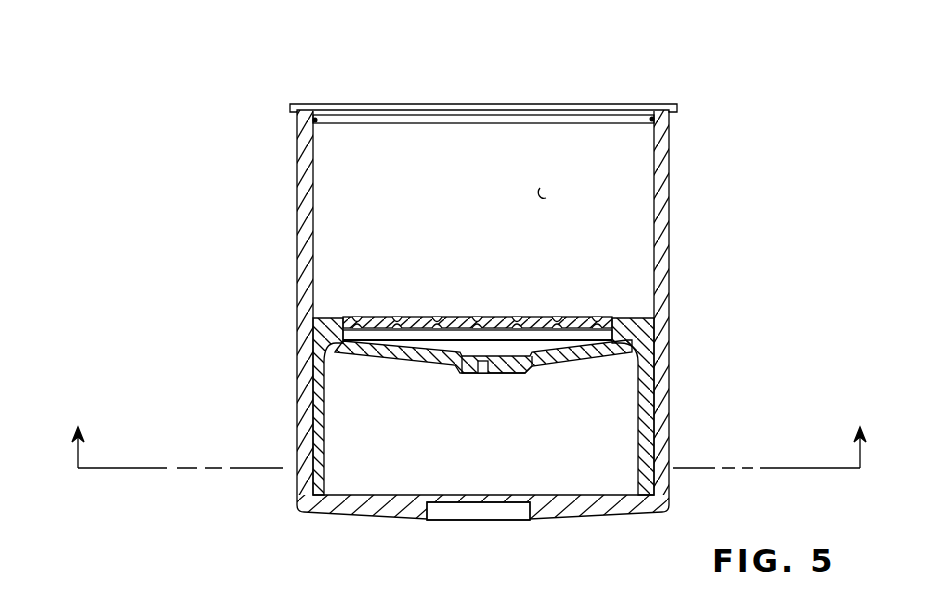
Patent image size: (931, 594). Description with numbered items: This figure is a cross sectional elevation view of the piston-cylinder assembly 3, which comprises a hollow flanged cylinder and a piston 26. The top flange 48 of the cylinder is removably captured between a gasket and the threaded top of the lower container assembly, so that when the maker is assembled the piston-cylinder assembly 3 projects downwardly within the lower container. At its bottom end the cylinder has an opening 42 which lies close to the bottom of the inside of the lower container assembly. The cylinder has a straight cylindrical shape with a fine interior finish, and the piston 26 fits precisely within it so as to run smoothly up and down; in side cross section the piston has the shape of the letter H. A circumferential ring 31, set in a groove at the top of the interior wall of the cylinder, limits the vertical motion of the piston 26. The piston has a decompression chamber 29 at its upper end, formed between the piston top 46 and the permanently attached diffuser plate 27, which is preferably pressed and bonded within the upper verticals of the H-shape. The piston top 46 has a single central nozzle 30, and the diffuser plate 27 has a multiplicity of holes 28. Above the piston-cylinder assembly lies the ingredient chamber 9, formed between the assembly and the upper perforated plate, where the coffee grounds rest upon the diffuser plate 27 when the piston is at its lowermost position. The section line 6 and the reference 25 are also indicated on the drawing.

The piston-cylinder assembly 3 is at (295, 202).
The section line 6- 6 is at (468, 446).
The ingredient chamber 9 is at (543, 190).
The liner insert 25 is at (322, 338).
The piston 26 is at (305, 448).
The diffuser plate 27 is at (540, 342).
The holes 28 is at (572, 318).
The decompression chamber 29 is at (532, 357).
The central nozzle 30 is at (480, 376).
The circumferential ring 31 is at (313, 122).
The opening 42 is at (437, 510).
The piston top 46 is at (537, 360).
The top flange 48 is at (295, 104).